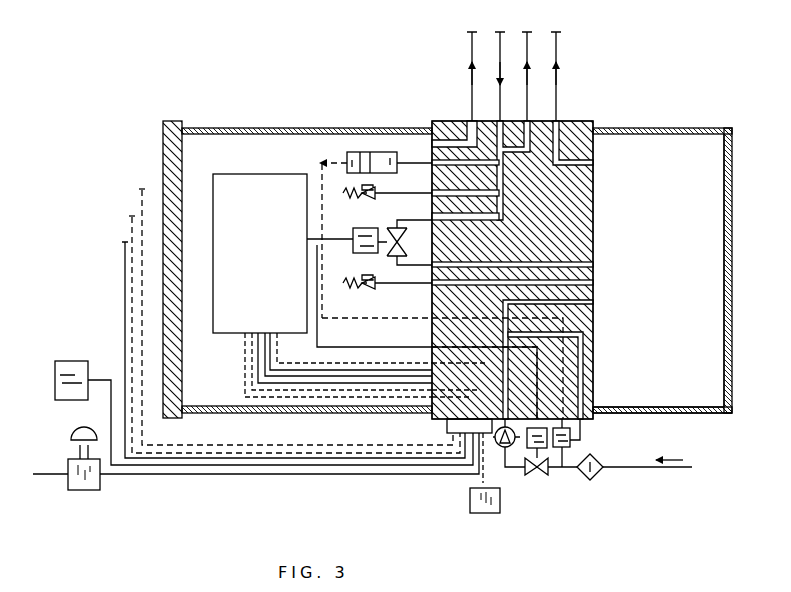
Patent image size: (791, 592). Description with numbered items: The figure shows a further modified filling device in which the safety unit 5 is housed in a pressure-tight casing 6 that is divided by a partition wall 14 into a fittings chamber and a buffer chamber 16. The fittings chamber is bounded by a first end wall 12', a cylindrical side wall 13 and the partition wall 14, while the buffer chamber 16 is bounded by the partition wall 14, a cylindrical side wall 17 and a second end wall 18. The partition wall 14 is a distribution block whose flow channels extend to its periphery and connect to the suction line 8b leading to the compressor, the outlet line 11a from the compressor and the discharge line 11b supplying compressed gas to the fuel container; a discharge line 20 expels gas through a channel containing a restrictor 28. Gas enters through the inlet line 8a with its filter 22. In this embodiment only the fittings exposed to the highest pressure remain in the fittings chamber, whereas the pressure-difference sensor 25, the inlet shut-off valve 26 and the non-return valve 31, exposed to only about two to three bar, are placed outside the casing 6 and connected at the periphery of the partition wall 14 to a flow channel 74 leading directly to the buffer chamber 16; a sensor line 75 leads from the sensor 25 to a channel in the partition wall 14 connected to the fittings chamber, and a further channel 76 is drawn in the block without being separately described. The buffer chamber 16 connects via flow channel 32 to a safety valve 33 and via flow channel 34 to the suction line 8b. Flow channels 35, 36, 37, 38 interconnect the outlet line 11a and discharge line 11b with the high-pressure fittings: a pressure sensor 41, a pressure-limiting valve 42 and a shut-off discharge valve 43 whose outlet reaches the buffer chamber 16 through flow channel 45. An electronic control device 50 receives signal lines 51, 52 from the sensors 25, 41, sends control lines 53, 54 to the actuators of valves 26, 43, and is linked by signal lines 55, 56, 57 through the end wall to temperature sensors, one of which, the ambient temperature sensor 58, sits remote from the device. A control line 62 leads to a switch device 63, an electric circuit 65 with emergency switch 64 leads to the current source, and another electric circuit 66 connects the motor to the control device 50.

The safety unit 5 is at (344, 106).
The pressure-tight casing 6 is at (600, 116).
The inlet line 8a is at (656, 467).
The suction line 8b is at (558, 82).
The outlet line 11a is at (500, 46).
The discharge line 11b is at (527, 46).
The first end wall 12' is at (272, 258).
The cylindrical side wall 13 is at (202, 405).
The partition wall 14 is at (590, 376).
The buffer chamber 16 is at (713, 398).
The cylindrical side wall 17 is at (690, 406).
The second end wall 18 is at (726, 298).
The discharge line 20 is at (469, 52).
The filter 22 is at (600, 478).
The pressure-difference sensor 25 is at (580, 441).
The inlet shut-off valve 26 is at (546, 470).
The restrictor 28 is at (450, 133).
The non-return valve 31 is at (498, 447).
The flow channel 32 is at (593, 282).
The safety valve 33 is at (368, 285).
The flow channel 34 is at (593, 162).
The flow channel 35 is at (555, 176).
The flow channel 36 is at (433, 147).
The flow channel 37 is at (475, 196).
The flow channel 38 is at (505, 216).
The pressure sensor 41 is at (367, 152).
The pressure-limiting valve 42 is at (370, 195).
The shut-off discharge valve 43 is at (393, 255).
The flow channel 45 is at (593, 264).
The electronic control device 50 is at (252, 209).
The signal line 51 is at (362, 318).
The signal line 52 is at (318, 163).
The control line 53 is at (350, 348).
The control line 54 is at (330, 240).
The signal line 55 is at (482, 484).
The signal line 56 is at (130, 232).
The signal line 57 is at (140, 202).
The temperature sensor 58 is at (471, 508).
The control line 62 is at (233, 468).
The switch device 63 is at (75, 361).
The emergency switch 64 is at (92, 485).
The electric circuit 65 is at (183, 476).
The electric circuit 66 is at (124, 272).
The flow channel 74 is at (593, 302).
The sensor line 75 is at (580, 427).
The channel 76 is at (583, 345).